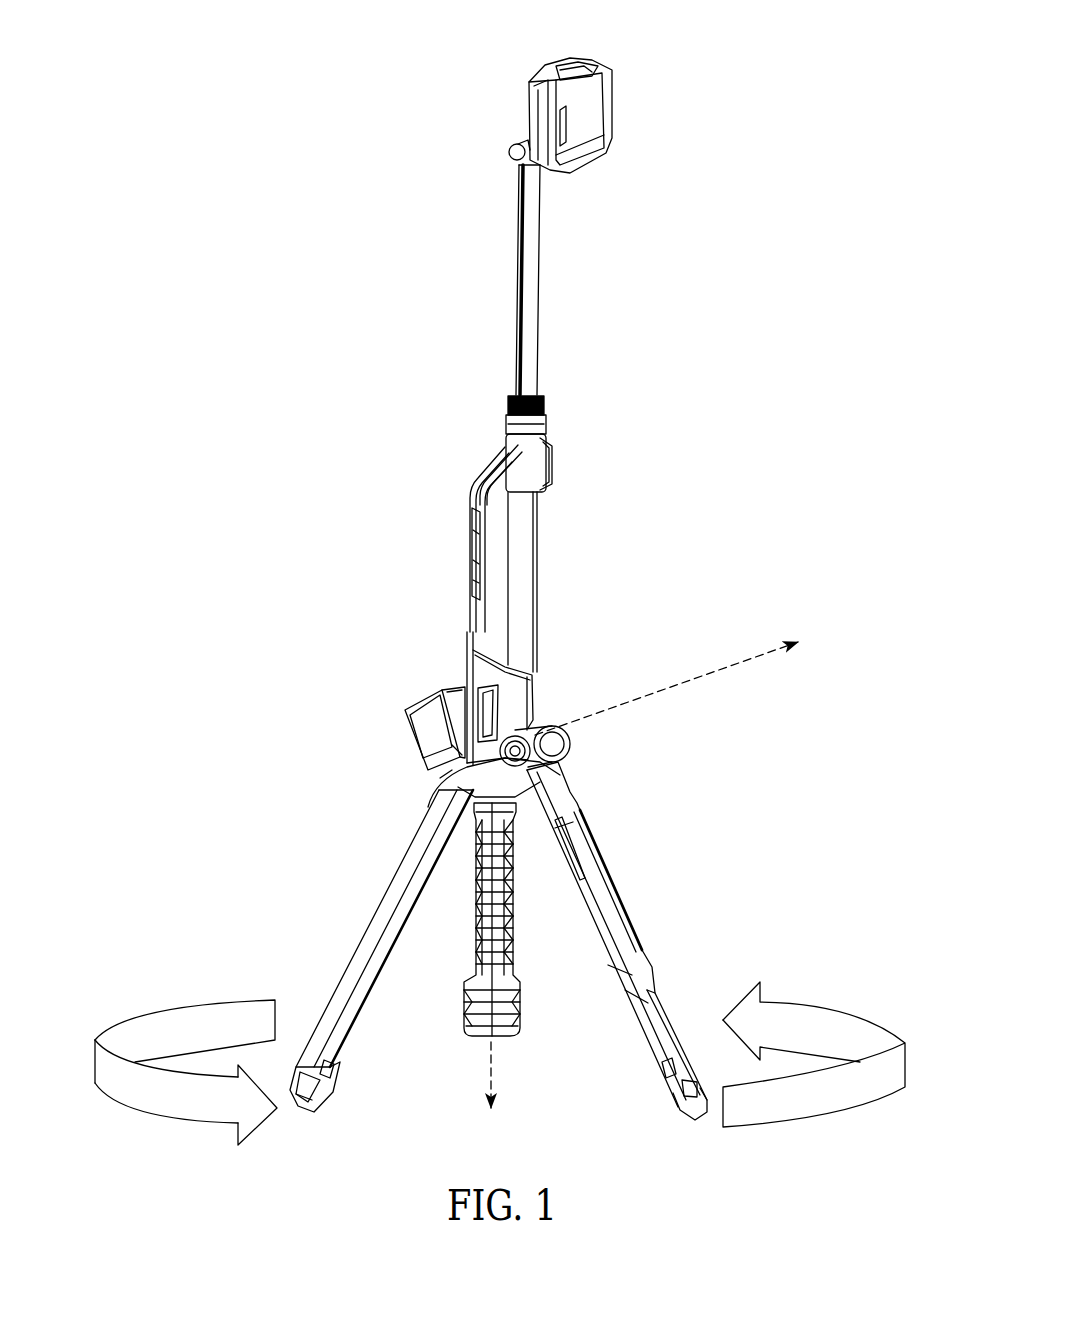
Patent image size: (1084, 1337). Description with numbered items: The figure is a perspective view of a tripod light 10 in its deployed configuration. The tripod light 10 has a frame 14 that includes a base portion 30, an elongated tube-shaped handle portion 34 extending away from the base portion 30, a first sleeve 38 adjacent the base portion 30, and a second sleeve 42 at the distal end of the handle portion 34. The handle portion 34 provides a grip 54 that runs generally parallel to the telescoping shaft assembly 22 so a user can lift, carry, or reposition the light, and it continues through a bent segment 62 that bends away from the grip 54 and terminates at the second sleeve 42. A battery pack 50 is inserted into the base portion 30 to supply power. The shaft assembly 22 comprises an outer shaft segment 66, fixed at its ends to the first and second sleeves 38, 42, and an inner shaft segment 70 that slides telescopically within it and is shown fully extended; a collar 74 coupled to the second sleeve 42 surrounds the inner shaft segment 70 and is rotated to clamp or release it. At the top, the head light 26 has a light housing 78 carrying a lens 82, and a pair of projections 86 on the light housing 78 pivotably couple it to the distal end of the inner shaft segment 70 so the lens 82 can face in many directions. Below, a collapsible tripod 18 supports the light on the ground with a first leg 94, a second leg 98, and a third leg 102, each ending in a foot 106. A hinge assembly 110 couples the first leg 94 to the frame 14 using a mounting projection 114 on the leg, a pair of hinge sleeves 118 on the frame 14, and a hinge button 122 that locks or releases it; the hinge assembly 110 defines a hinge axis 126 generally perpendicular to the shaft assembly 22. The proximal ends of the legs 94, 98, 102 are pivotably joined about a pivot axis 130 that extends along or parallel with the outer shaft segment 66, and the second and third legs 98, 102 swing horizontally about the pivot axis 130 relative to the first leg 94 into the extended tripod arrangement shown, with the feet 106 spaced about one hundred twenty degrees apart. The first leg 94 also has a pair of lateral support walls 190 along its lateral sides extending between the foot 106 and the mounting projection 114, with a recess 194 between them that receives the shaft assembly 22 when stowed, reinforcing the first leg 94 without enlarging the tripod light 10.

The tripod light 10 is at (400, 185).
The frame 14 is at (428, 546).
The tripod 18 is at (330, 823).
The shaft assembly 22 is at (565, 505).
The head light 26 is at (692, 166).
The base portion 30 is at (450, 650).
The handle portion 34 is at (425, 472).
The first sleeve 38 is at (560, 632).
The second sleeve 42 is at (572, 437).
The battery pack 50 is at (410, 742).
The grip 54 is at (470, 520).
The bent segment 62 is at (492, 470).
The outer shaft segment 66 is at (540, 556).
The inner shaft segment 70 is at (540, 222).
The collar 74 is at (512, 396).
The light housing 78 is at (562, 70).
The lens 82 is at (582, 135).
The projections 86 is at (512, 158).
The first leg 94 is at (570, 790).
The second leg 98 is at (362, 945).
The third leg 102 is at (472, 968).
The foot 106 is at (308, 1110).
The hinge assembly 110 is at (620, 733).
The mounting projection 114 is at (540, 745).
The hinge sleeves 118 is at (552, 722).
The hinge button 122 is at (462, 777).
The hinge axis 126 is at (752, 664).
The pivot axis 130 is at (480, 1056).
The lateral support walls 190 is at (598, 840).
The recess 194 is at (622, 904).